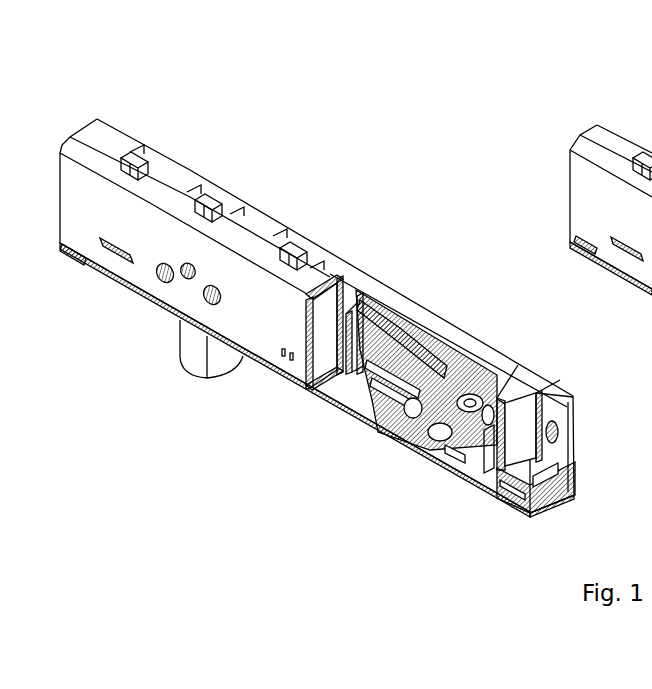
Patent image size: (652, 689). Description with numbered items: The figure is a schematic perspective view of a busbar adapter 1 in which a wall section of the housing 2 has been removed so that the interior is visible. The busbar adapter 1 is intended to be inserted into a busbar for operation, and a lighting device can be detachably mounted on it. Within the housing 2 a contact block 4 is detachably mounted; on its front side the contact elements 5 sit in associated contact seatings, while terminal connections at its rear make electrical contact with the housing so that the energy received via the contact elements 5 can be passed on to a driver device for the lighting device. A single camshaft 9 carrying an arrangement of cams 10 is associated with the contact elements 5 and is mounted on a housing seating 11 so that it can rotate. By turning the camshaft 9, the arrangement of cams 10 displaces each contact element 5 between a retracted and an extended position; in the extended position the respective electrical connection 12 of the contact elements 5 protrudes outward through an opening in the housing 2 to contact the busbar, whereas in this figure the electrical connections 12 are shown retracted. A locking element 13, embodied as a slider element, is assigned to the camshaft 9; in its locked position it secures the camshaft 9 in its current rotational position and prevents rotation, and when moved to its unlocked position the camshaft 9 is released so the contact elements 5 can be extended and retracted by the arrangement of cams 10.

The busbar adapter 1 is at (280, 120).
The housing 2 is at (607, 133).
The contact block 4 is at (330, 333).
The contact elements 5 is at (387, 343).
The camshaft 9 is at (453, 450).
The arrangement of cams 10 is at (470, 402).
The housing seating 11 is at (417, 443).
The electrical connections 12 is at (452, 444).
The locking element 13 is at (490, 447).